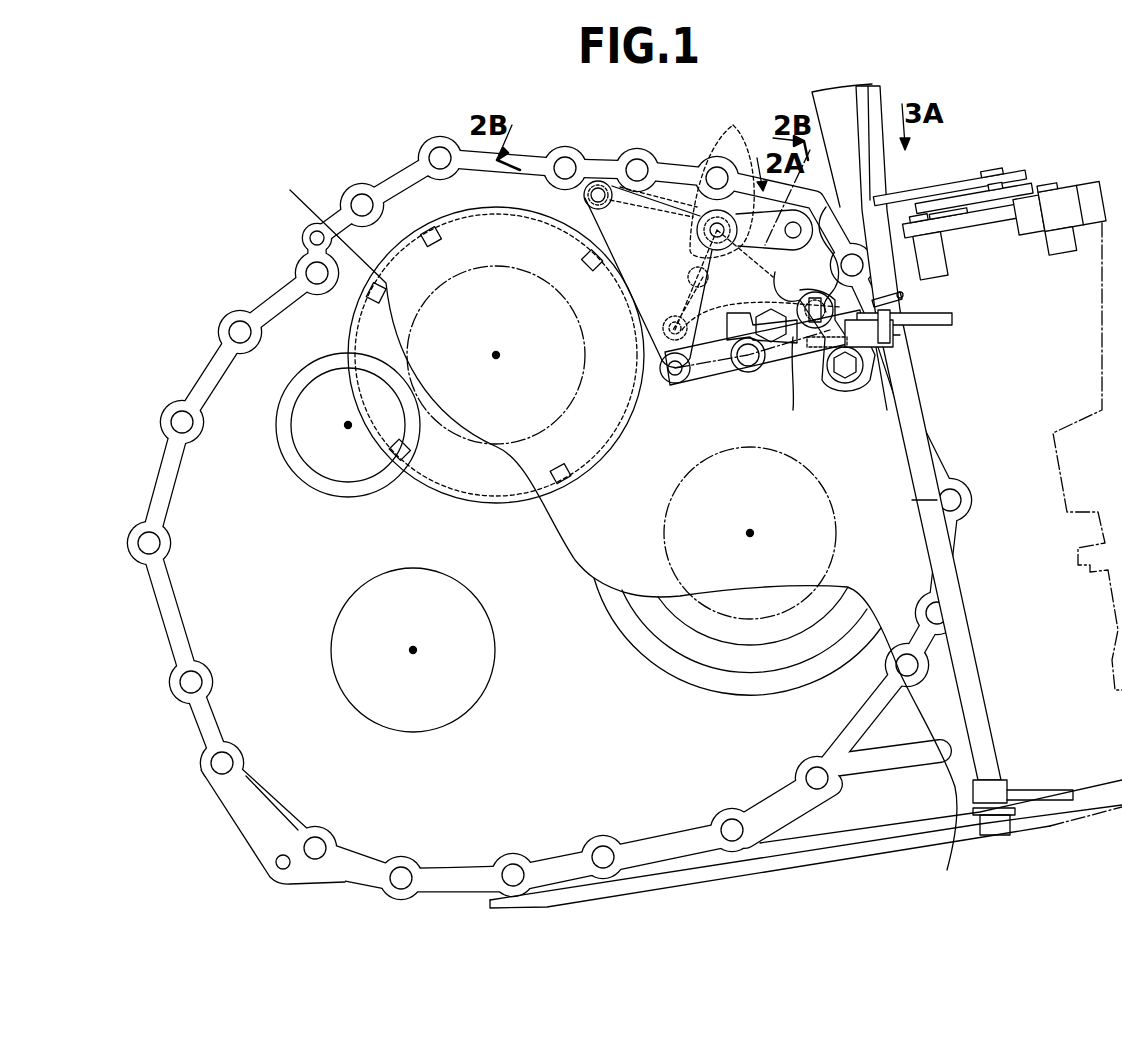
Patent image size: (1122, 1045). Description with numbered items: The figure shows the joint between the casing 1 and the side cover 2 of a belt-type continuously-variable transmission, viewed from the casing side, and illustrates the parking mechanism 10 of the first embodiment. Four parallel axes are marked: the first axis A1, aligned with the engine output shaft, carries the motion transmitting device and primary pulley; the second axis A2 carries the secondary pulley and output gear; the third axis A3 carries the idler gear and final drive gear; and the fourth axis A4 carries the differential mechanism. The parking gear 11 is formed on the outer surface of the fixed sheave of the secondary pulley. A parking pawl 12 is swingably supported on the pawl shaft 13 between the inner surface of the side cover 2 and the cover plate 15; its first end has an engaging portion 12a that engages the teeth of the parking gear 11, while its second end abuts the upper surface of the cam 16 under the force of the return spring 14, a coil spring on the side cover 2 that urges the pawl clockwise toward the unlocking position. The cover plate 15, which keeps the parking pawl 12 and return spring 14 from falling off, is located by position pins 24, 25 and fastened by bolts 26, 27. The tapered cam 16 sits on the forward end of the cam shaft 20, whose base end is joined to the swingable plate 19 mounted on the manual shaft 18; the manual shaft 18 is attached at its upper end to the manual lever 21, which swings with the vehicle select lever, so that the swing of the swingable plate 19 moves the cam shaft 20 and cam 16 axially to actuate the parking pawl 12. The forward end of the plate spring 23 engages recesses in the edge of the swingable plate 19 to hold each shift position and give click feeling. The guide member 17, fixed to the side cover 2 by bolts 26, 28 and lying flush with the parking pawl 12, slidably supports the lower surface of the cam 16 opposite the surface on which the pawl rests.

The transmission case cover 1 is at (206, 360).
The side cover 2 is at (672, 205).
The parking mechanism 10 is at (988, 123).
The parking gear 11 is at (445, 205).
The parking pawl 12 is at (680, 232).
The engaging portion 12a is at (568, 182).
The pawl shaft 13 is at (662, 370).
The return spring 14 is at (748, 240).
The cover plate 15 is at (718, 374).
The cam 16 is at (915, 307).
The guide member 17 is at (812, 340).
The manual shaft 18 is at (928, 472).
The swingable plate 19 is at (942, 322).
The cam shaft 20 is at (770, 350).
The manual lever 21 is at (922, 190).
The plate spring 23 is at (880, 380).
The position pin 24 is at (836, 212).
The position pin 25 is at (672, 386).
The bolt 26 is at (752, 378).
The bolt 27 is at (598, 186).
The bolt 28 is at (850, 382).
The first axis A1 is at (750, 533).
The second axis A2 is at (496, 355).
The third axis A3 is at (348, 425).
The fourth axis A4 is at (413, 650).